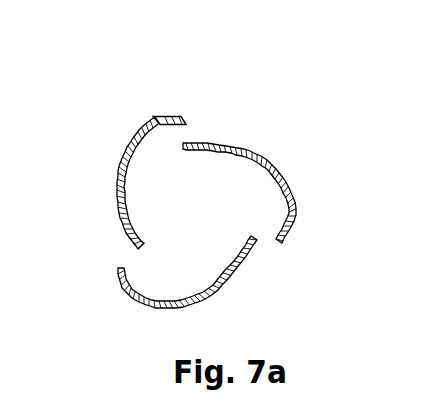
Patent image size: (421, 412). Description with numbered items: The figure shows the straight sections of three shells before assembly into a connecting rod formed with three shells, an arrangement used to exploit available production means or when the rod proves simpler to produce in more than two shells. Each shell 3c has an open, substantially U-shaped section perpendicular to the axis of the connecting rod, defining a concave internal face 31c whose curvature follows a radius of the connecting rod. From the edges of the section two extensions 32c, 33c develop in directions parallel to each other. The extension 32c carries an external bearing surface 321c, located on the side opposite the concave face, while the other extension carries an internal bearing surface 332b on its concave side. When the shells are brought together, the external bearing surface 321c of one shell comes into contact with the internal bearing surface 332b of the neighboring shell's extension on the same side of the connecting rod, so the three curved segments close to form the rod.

The shell 3c is at (123, 157).
The extension 32c is at (170, 116).
The internal bearing surface 332b is at (185, 124).
The concave internal face 31c is at (139, 151).
The extension 33c is at (137, 225).
The external bearing surface 321c is at (145, 244).